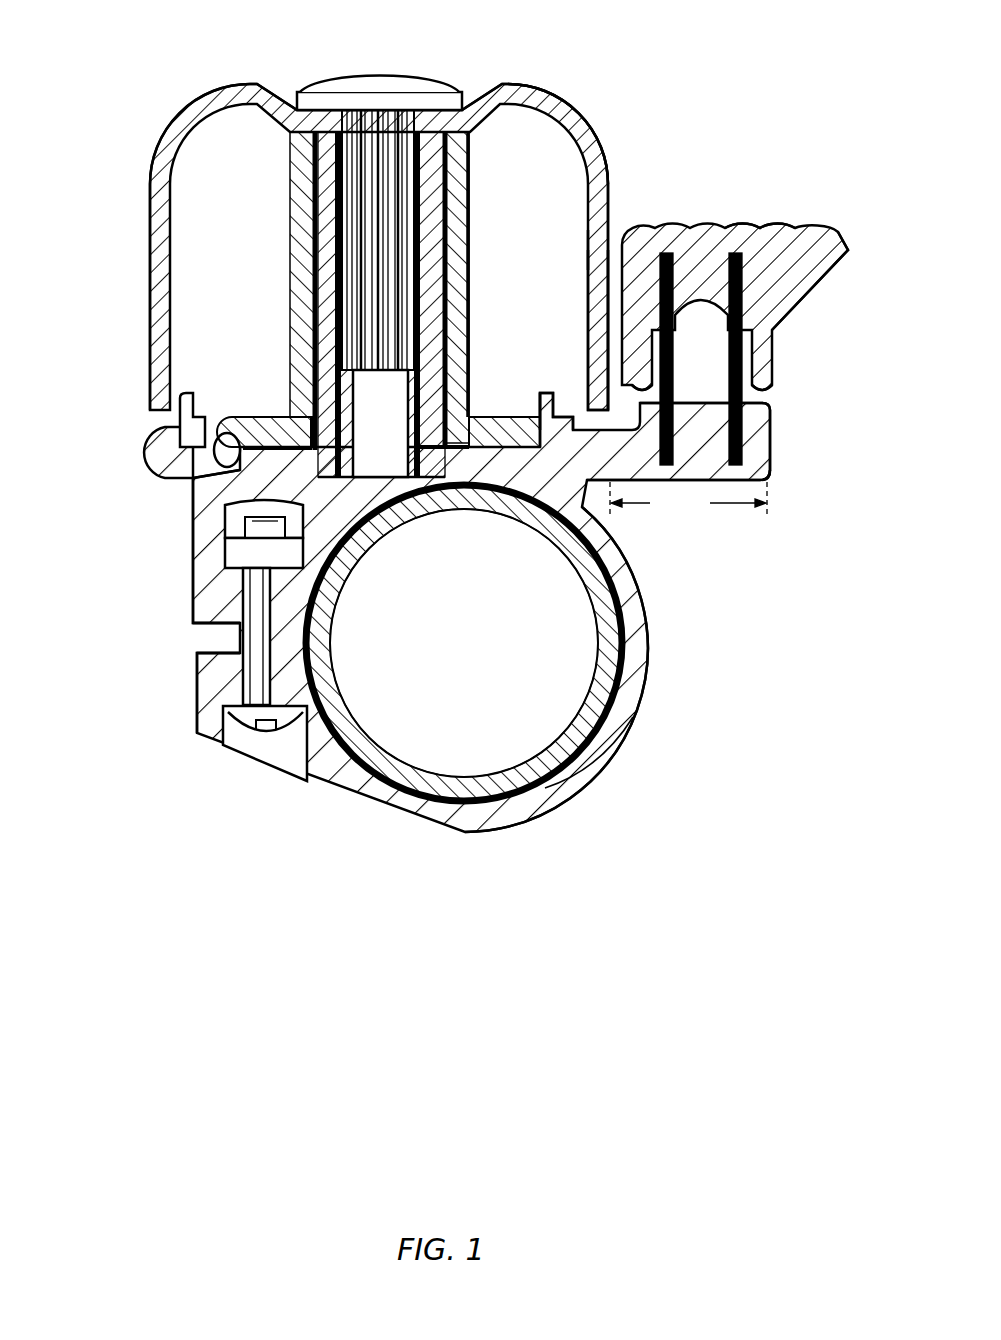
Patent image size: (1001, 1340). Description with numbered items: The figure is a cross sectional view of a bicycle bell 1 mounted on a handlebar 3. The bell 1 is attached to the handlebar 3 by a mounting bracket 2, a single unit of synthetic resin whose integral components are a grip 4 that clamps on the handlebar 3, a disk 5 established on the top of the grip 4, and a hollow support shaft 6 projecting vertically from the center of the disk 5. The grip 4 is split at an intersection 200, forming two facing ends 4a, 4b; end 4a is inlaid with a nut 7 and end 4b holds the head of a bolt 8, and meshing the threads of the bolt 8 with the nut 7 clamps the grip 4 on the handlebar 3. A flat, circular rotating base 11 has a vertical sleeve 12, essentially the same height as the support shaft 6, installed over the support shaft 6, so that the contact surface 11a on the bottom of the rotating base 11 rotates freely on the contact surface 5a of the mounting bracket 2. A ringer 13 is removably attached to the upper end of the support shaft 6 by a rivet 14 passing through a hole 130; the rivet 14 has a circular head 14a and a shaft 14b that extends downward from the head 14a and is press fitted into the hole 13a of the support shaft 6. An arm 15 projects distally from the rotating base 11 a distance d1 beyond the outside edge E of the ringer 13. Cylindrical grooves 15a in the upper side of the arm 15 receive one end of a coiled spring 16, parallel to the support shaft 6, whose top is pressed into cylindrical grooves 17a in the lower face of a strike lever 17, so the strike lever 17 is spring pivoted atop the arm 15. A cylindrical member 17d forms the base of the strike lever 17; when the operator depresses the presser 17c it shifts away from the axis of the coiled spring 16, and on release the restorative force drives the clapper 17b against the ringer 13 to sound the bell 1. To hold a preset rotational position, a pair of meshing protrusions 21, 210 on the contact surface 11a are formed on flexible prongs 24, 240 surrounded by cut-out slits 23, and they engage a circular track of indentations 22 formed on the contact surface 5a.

The bell 1 is at (545, 70).
The mounting bracket 2 is at (632, 744).
The bicycle handlebar 3 is at (553, 788).
The grip 4 is at (647, 708).
The end 4a is at (197, 612).
The end 4b is at (200, 722).
The disk 5 is at (190, 480).
The contact surface 5a is at (467, 450).
The hollow support shaft 6 is at (330, 255).
The nut 7 is at (225, 542).
The bolt 8 is at (250, 732).
The rotating base 11 is at (629, 495).
The contact surface 11a is at (483, 417).
The vertical sleeve 12 is at (302, 195).
The ringer 13 is at (600, 200).
The hole 13a is at (380, 479).
The rivet 14 is at (383, 66).
The circular head 14a is at (338, 82).
The shaft 14b is at (480, 157).
The arm 15 is at (773, 440).
The cylindrical grooves 15a is at (760, 483).
The coiled spring 16 is at (745, 345).
The strike lever 17 is at (797, 300).
The cylindrical grooves 17a is at (760, 262).
The clapper 17b is at (587, 247).
The presser 17c is at (792, 250).
The cylindrical member 17d is at (760, 390).
The meshing protrusion 21 is at (227, 512).
The indentations 22 is at (180, 397).
The cut-out slits 23 is at (222, 440).
The flexible prong 24 is at (212, 425).
The hole 130 is at (388, 197).
The intersection 200 is at (213, 638).
The meshing protrusion 210 is at (510, 455).
The flexible prong 240 is at (520, 425).
The outside edge E is at (603, 330).
The distance d1 is at (688, 501).